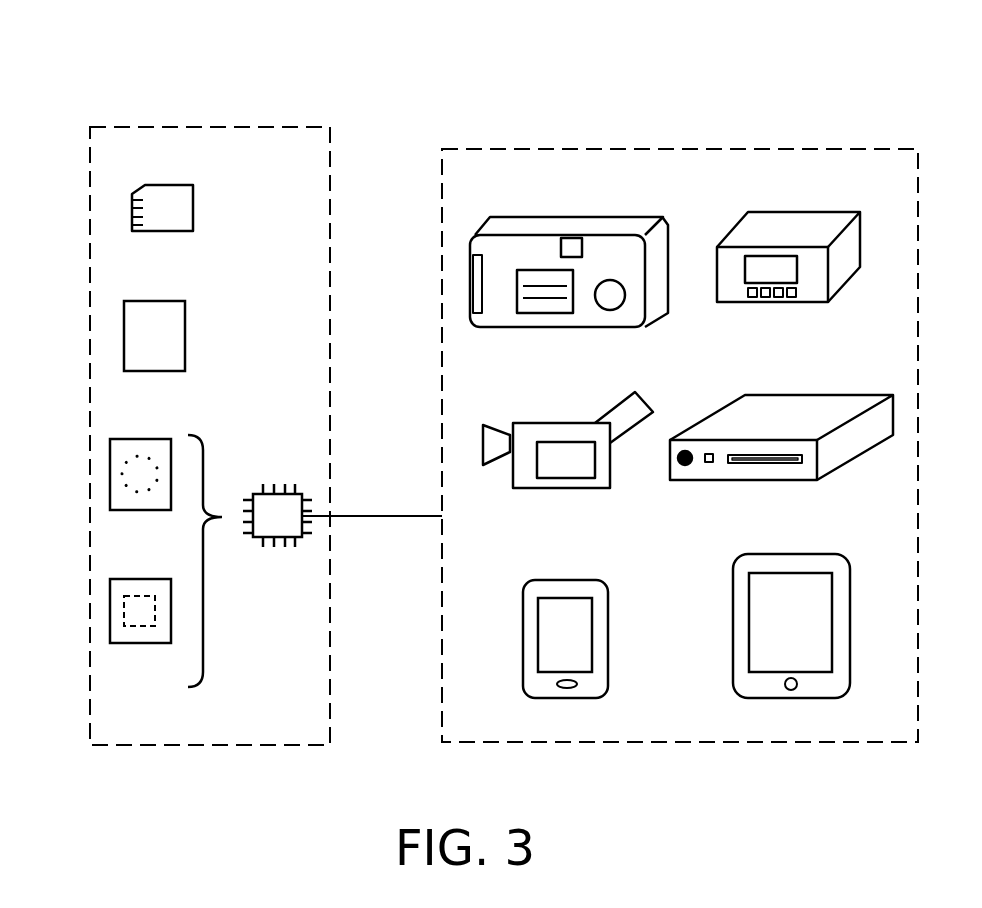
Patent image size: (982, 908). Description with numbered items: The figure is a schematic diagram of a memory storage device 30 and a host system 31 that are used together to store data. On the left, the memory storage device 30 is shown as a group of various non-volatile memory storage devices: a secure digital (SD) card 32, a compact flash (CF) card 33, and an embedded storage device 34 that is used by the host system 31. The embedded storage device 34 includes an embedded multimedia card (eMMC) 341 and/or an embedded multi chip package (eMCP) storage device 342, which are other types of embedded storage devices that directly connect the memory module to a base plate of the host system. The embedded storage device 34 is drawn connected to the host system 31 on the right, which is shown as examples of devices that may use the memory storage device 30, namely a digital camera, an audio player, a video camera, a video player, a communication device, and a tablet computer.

The memory storage device 30 is at (200, 126).
The host system 31 is at (603, 148).
The secure digital (SD) card 32 is at (132, 212).
The compact flash (CF) card 33 is at (124, 340).
The embedded storage device 34 is at (280, 484).
The embedded multimedia card (eMMC) 341 is at (110, 476).
The embedded multi chip package (eMCP) storage device 342 is at (110, 613).